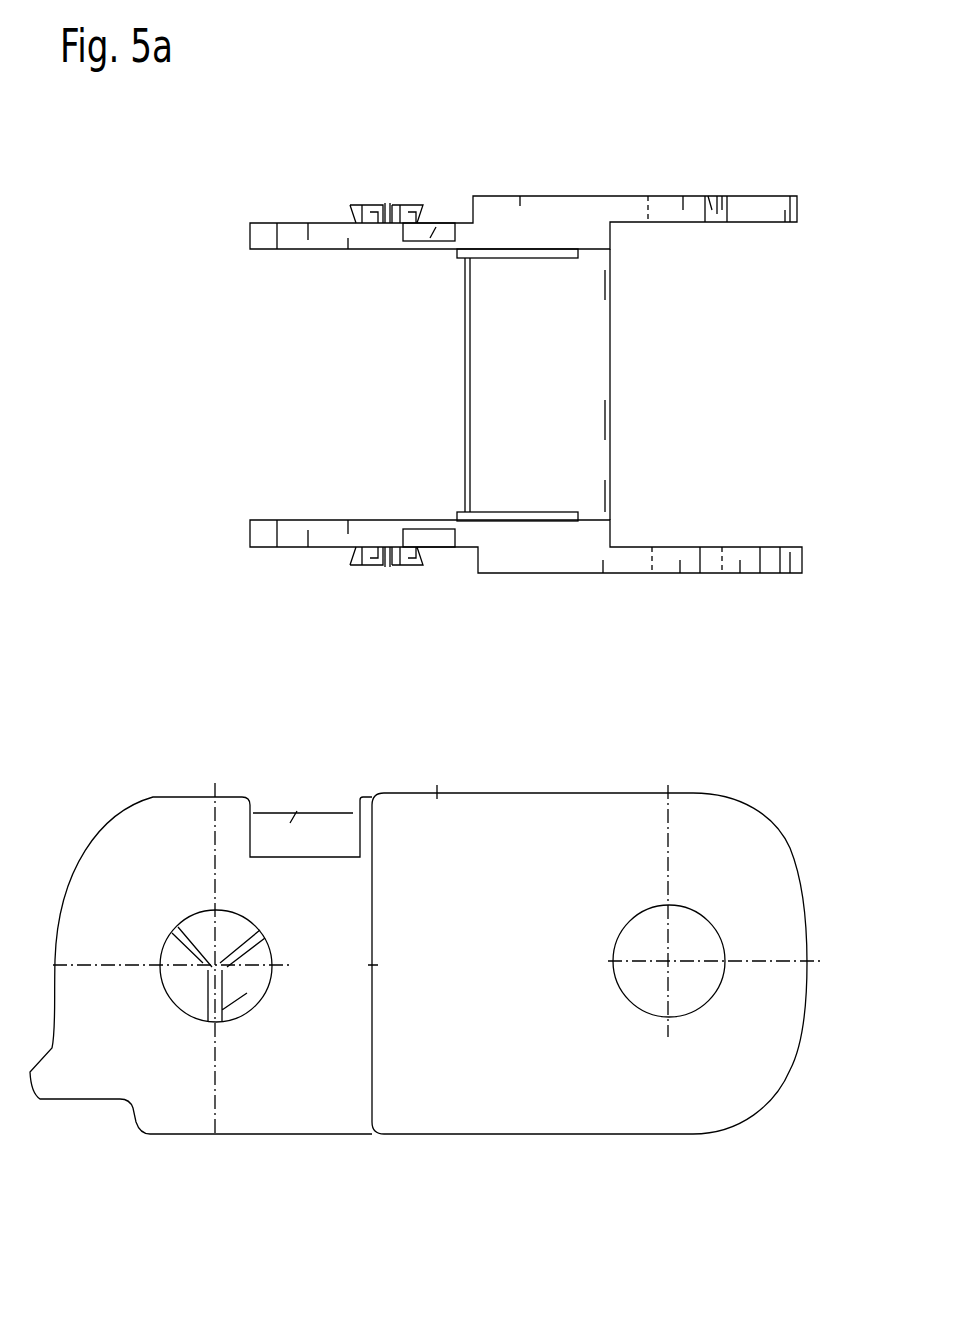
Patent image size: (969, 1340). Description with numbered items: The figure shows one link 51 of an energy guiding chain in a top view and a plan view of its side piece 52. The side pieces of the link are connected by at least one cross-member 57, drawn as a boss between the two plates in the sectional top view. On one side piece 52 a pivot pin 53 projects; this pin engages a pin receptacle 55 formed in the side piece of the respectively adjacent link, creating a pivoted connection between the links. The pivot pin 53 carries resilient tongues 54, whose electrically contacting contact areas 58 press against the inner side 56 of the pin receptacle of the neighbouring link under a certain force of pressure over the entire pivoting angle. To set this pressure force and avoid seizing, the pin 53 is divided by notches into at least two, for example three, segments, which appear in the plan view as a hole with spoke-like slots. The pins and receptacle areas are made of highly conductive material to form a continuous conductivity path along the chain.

The link 51 is at (338, 360).
The side piece 52 is at (548, 215).
The pivot pin 53 is at (377, 187).
The resilient tongue 54 is at (352, 205).
The pin receptacle 55 is at (685, 203).
The inner side 56 is at (712, 200).
The cross-member 57 is at (590, 393).
The contact area 58 is at (342, 207).